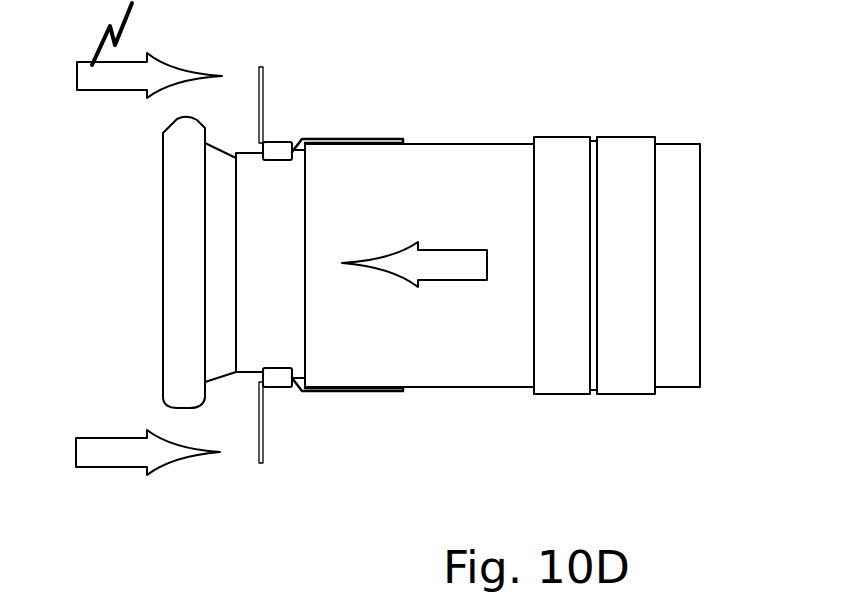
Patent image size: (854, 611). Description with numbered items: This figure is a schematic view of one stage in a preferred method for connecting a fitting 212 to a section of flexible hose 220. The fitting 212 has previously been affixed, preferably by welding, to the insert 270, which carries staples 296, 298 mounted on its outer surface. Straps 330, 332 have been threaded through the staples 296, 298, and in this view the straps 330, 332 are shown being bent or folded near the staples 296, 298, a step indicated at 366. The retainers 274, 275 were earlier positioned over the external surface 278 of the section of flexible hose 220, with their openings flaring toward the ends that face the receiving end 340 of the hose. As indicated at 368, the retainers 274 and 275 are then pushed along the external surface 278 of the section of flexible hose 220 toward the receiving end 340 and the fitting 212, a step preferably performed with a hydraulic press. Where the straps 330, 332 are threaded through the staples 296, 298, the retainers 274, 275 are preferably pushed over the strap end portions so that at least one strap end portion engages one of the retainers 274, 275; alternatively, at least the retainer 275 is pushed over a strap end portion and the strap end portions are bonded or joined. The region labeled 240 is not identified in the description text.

The fitting 212 is at (289, 262).
The section of flexible hose 220 is at (419, 219).
The inner chamber wall 240 is at (379, 265).
The insert 270 is at (413, 177).
The retainer 274 is at (576, 224).
The retainer 275 is at (648, 311).
The external surface 278 is at (419, 436).
The staple 296 is at (298, 104).
The staple 298 is at (298, 425).
The strap 330 is at (356, 95).
The strap 332 is at (361, 435).
The receiving end 340 is at (166, 262).
The strap bending step 366 is at (148, 495).
The retainer pushing step 368 is at (432, 308).